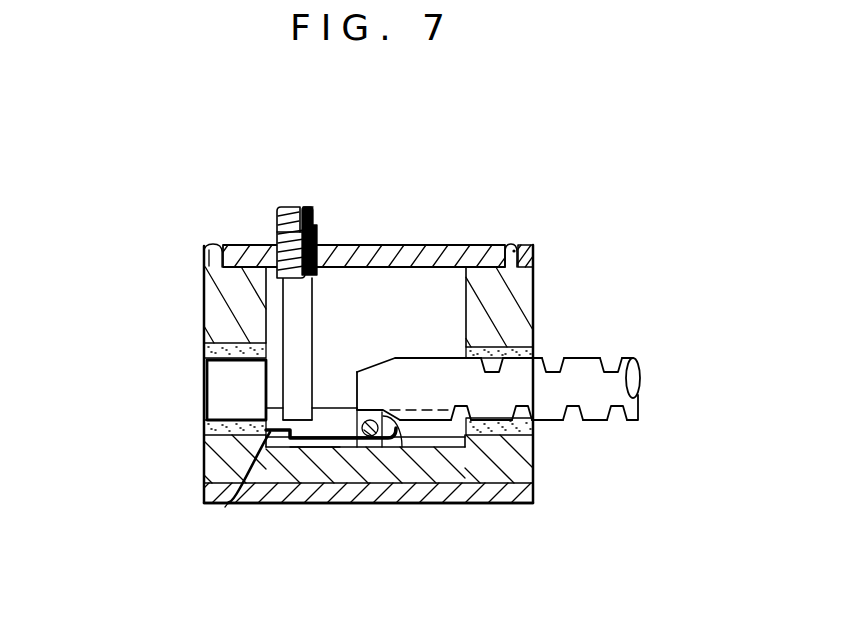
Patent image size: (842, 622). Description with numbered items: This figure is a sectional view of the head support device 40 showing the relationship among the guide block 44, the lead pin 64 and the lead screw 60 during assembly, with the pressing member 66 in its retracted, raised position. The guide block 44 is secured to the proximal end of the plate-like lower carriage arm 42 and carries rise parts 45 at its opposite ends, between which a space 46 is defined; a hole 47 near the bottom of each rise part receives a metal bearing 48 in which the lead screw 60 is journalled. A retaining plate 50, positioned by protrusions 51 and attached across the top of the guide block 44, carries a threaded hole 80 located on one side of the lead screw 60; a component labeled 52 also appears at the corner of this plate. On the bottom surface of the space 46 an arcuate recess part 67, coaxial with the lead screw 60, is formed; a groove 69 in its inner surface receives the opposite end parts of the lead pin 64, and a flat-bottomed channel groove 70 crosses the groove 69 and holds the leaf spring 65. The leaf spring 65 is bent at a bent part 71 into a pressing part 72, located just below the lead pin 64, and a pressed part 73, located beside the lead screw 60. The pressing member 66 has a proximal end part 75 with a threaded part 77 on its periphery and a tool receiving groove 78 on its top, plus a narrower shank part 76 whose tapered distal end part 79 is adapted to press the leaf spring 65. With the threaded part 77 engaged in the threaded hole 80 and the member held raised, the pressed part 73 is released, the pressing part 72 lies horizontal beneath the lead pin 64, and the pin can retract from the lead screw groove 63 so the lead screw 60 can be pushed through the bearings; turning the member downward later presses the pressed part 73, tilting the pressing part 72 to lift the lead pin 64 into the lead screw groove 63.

The head support device 40 is at (185, 503).
The lower carriage arm 42 is at (523, 507).
The guide block 44 is at (203, 481).
The rise parts 45 is at (203, 280).
The space 46 is at (373, 277).
The hole 47 is at (230, 403).
The metal bearing 48 is at (203, 355).
The retaining plate 50 is at (445, 245).
The protrusions 51 is at (513, 245).
The corner block 52 is at (525, 248).
The lead screw 60 is at (533, 373).
The lead screw groove 63 is at (607, 368).
The lead pin 64 is at (380, 437).
The leaf spring 65 is at (262, 462).
The pressing member 66 is at (339, 173).
The recess part 67 is at (433, 440).
The groove 69 is at (370, 440).
The channel groove 70 is at (342, 447).
The bent part 71 is at (310, 447).
The pressing part 72 is at (333, 417).
The pressed part 73 is at (290, 445).
The proximal end part 75 is at (261, 268).
The shank part 76 is at (227, 383).
The threaded part 77 is at (289, 207).
The tool receiving groove 78 is at (300, 205).
The distal end part 79 is at (217, 507).
The threaded hole 80 is at (278, 240).